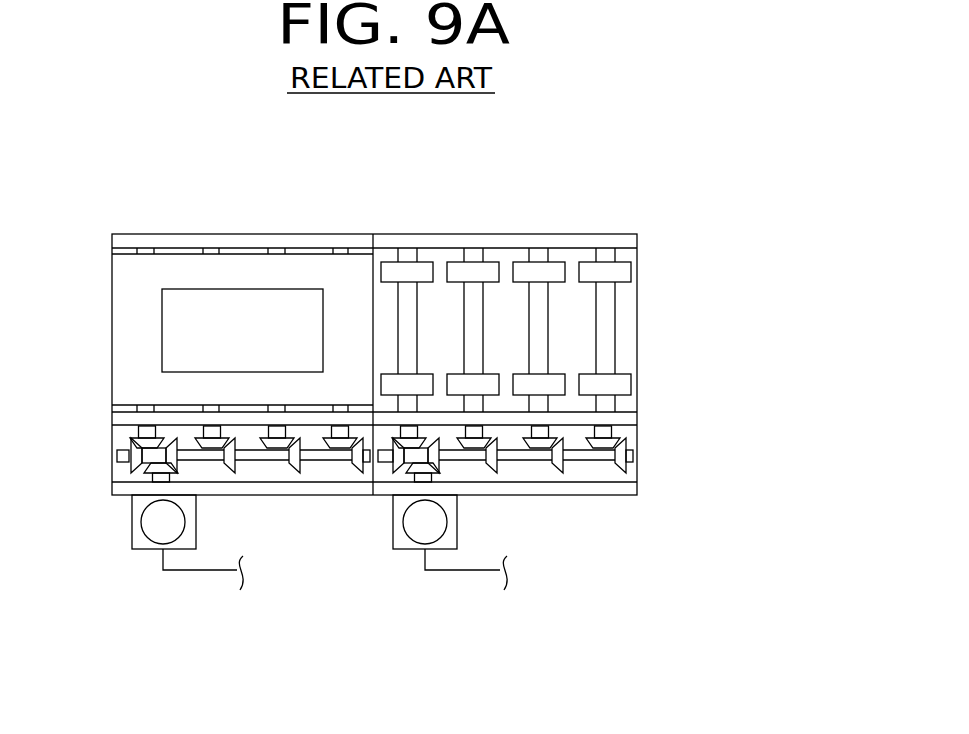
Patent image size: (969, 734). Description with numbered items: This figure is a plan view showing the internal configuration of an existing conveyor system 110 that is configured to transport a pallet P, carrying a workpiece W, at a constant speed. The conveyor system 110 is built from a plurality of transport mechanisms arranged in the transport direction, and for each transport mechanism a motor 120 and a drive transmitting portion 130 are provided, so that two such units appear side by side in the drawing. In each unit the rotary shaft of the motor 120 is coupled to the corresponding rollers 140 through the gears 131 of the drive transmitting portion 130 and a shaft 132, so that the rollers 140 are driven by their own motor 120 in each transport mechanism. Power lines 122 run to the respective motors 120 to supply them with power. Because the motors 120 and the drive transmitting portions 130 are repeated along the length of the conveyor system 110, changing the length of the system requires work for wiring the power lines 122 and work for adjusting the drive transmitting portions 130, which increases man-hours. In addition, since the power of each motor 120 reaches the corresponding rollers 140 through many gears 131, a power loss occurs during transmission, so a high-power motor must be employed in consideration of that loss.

The conveyor system 110 is at (152, 153).
The pallet P is at (318, 252).
The workpiece W is at (247, 298).
The motor 120 is at (142, 543).
The power line 122 is at (208, 572).
The drive transmitting portion 130 is at (285, 572).
The gear 131 is at (290, 458).
The shaft 132 is at (603, 291).
The roller 140 is at (605, 268).